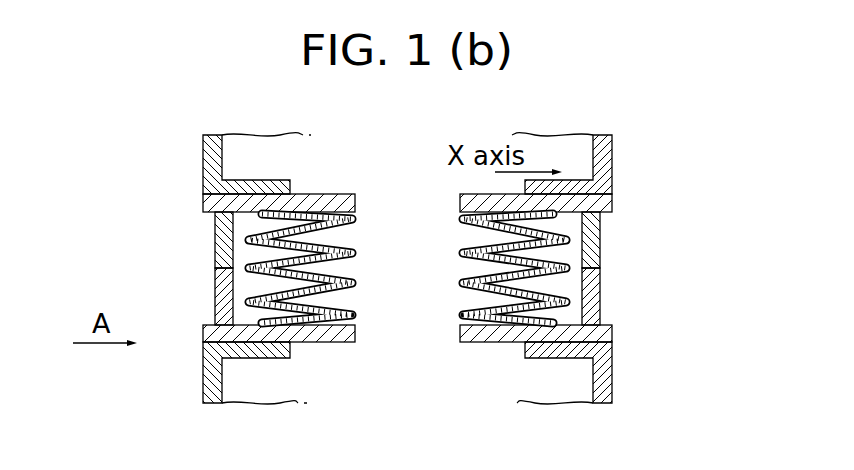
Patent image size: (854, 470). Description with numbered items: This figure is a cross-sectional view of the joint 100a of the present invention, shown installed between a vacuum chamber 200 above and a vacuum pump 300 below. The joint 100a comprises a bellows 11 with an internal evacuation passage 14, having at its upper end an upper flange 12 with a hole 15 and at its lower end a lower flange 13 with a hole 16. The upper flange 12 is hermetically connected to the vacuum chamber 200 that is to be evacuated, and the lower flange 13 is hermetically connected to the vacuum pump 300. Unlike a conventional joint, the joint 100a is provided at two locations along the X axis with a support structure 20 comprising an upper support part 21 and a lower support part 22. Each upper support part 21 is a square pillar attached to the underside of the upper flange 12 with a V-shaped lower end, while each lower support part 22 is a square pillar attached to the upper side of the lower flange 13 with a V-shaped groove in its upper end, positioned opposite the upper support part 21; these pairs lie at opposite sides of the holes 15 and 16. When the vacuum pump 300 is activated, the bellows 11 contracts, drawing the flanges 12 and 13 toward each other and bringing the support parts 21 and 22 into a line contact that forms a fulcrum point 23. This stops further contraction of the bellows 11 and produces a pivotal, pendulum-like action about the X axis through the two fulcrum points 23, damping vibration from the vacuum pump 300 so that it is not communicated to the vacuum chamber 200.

The joint 100a is at (188, 203).
The vacuum chamber 200 is at (606, 158).
The vacuum pump 300 is at (606, 375).
The bellows 11 is at (356, 258).
The upper flange 12 is at (356, 206).
The lower flange 13 is at (358, 345).
The internal evacuation passage 14 is at (412, 270).
The hole 15 is at (407, 208).
The hole 16 is at (401, 330).
The support structure 20 is at (406, 267).
The upper support part 21 is at (215, 235).
The lower support part 22 is at (215, 302).
The fulcrum point 23 is at (215, 268).